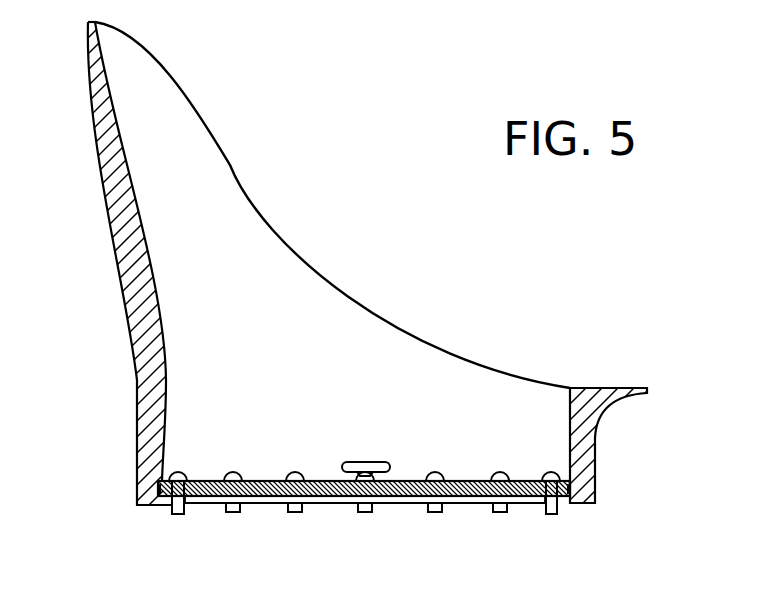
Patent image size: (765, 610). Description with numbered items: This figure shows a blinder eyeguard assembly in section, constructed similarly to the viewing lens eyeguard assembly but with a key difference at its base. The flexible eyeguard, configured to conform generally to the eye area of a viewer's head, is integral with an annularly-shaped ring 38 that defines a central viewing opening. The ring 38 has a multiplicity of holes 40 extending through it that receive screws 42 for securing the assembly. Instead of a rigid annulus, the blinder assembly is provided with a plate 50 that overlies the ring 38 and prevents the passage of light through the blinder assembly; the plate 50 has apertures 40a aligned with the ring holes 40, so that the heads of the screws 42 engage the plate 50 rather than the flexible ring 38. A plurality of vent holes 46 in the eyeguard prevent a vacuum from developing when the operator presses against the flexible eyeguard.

The ring 38 is at (193, 510).
The holes 40 is at (554, 503).
The apertures 40a is at (160, 490).
The screws 42 is at (236, 472).
The vent holes 46 is at (367, 462).
The plate 50 is at (467, 481).